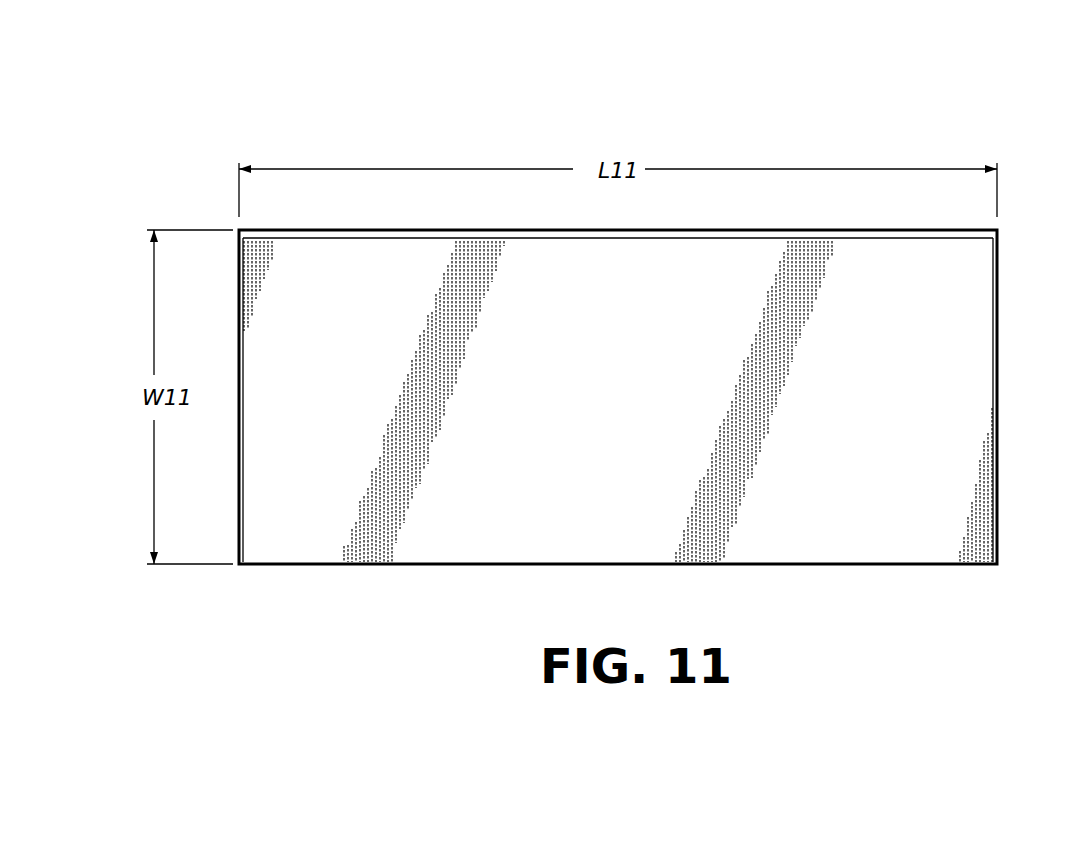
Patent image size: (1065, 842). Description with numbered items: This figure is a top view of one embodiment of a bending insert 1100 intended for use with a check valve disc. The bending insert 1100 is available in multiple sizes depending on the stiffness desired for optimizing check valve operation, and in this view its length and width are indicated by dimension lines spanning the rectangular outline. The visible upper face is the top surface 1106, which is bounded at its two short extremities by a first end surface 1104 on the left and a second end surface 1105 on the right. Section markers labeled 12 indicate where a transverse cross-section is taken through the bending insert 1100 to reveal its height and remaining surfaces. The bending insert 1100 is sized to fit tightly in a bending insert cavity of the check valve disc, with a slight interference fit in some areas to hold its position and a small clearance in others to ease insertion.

The bending insert 1100 is at (376, 96).
The first end surface 1104 is at (240, 425).
The second end surface 1105 is at (998, 510).
The top surface 1106 is at (808, 508).
The section line for FIG. 12 is at (578, 246).